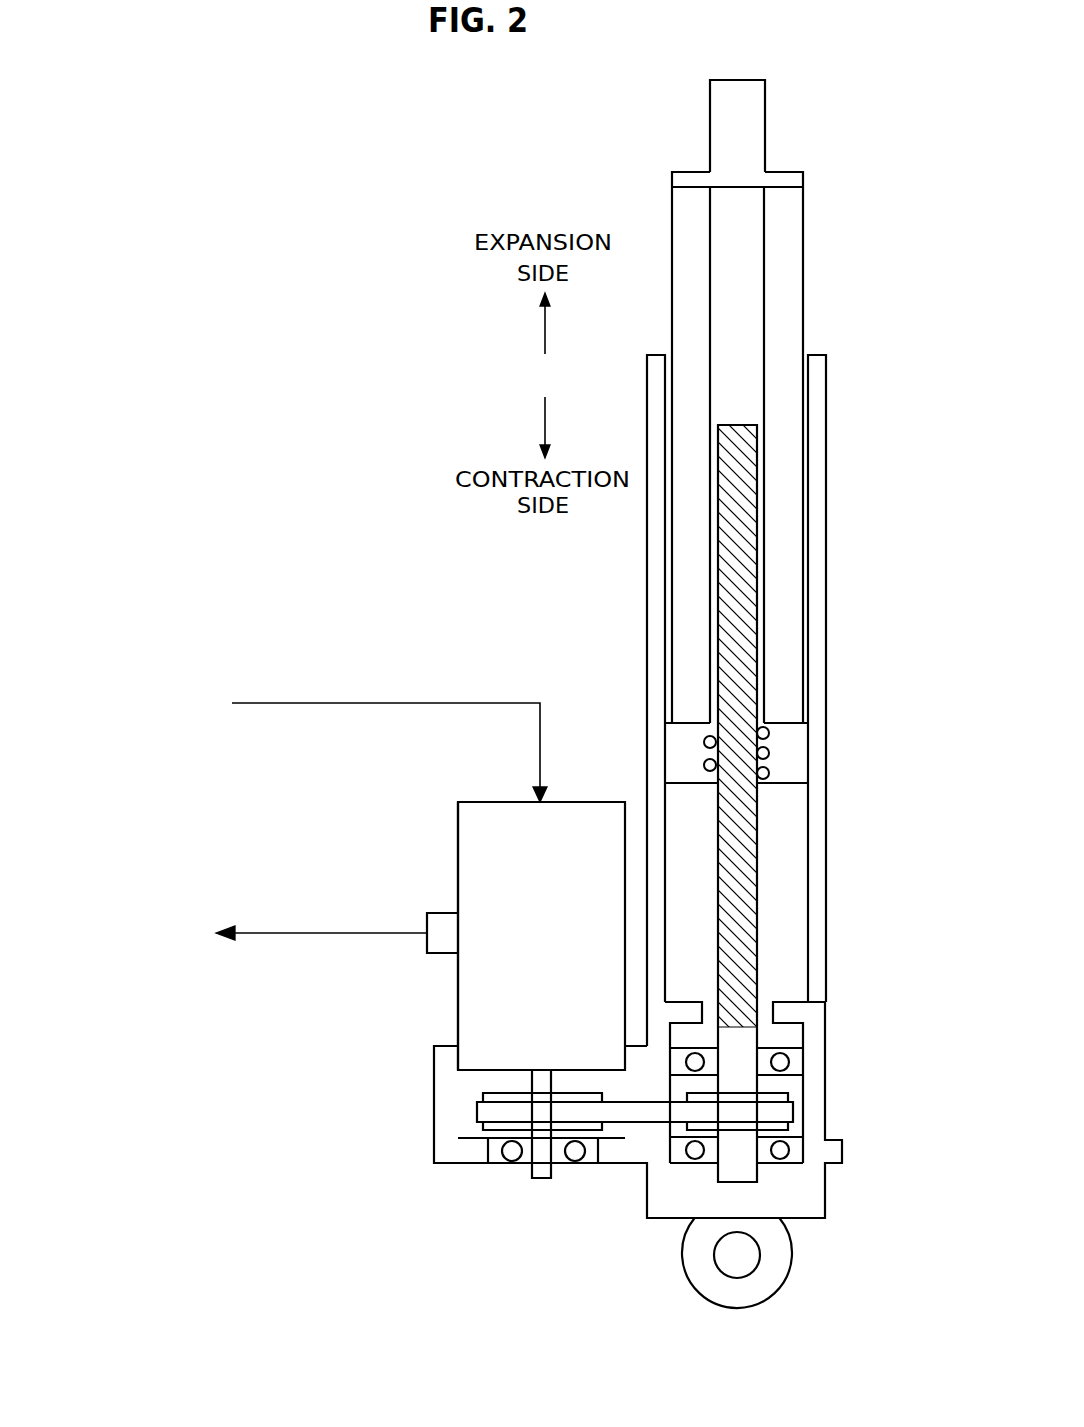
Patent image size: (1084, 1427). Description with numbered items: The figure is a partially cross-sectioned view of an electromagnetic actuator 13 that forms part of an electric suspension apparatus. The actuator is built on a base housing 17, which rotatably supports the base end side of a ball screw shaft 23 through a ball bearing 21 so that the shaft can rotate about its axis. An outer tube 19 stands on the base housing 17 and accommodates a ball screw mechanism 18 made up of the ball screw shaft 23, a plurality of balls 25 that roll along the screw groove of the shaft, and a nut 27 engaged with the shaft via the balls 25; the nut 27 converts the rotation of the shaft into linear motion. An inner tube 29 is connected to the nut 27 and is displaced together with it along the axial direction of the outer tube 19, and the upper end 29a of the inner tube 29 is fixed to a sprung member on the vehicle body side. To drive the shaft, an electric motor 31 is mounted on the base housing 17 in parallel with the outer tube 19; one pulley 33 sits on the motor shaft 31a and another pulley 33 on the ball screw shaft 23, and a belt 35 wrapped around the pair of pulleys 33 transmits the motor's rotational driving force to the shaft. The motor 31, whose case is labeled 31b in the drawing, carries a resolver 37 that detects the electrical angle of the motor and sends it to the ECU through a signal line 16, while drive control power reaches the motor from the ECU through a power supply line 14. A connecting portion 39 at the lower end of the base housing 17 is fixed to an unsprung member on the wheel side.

The electromagnetic actuator 13 is at (838, 190).
The power supply line 14 is at (363, 703).
The signal line 16 is at (328, 933).
The base housing 17 is at (813, 1100).
The ball screw mechanism 18 is at (905, 655).
The outer tube 19 is at (817, 402).
The ball bearing 21 is at (780, 1062).
The ball screw shaft 23 is at (745, 832).
The balls 25 is at (770, 773).
The nut 27 is at (690, 742).
The inner tube 29 is at (785, 243).
The upper end 29a is at (743, 123).
The electric motor 31 is at (572, 825).
The motor shaft 31a is at (540, 1168).
The motor case 31b is at (475, 828).
The pulleys 33 is at (483, 1125).
The belt 35 is at (646, 1112).
The resolver 37 is at (443, 923).
The connecting portion 39 is at (777, 1258).